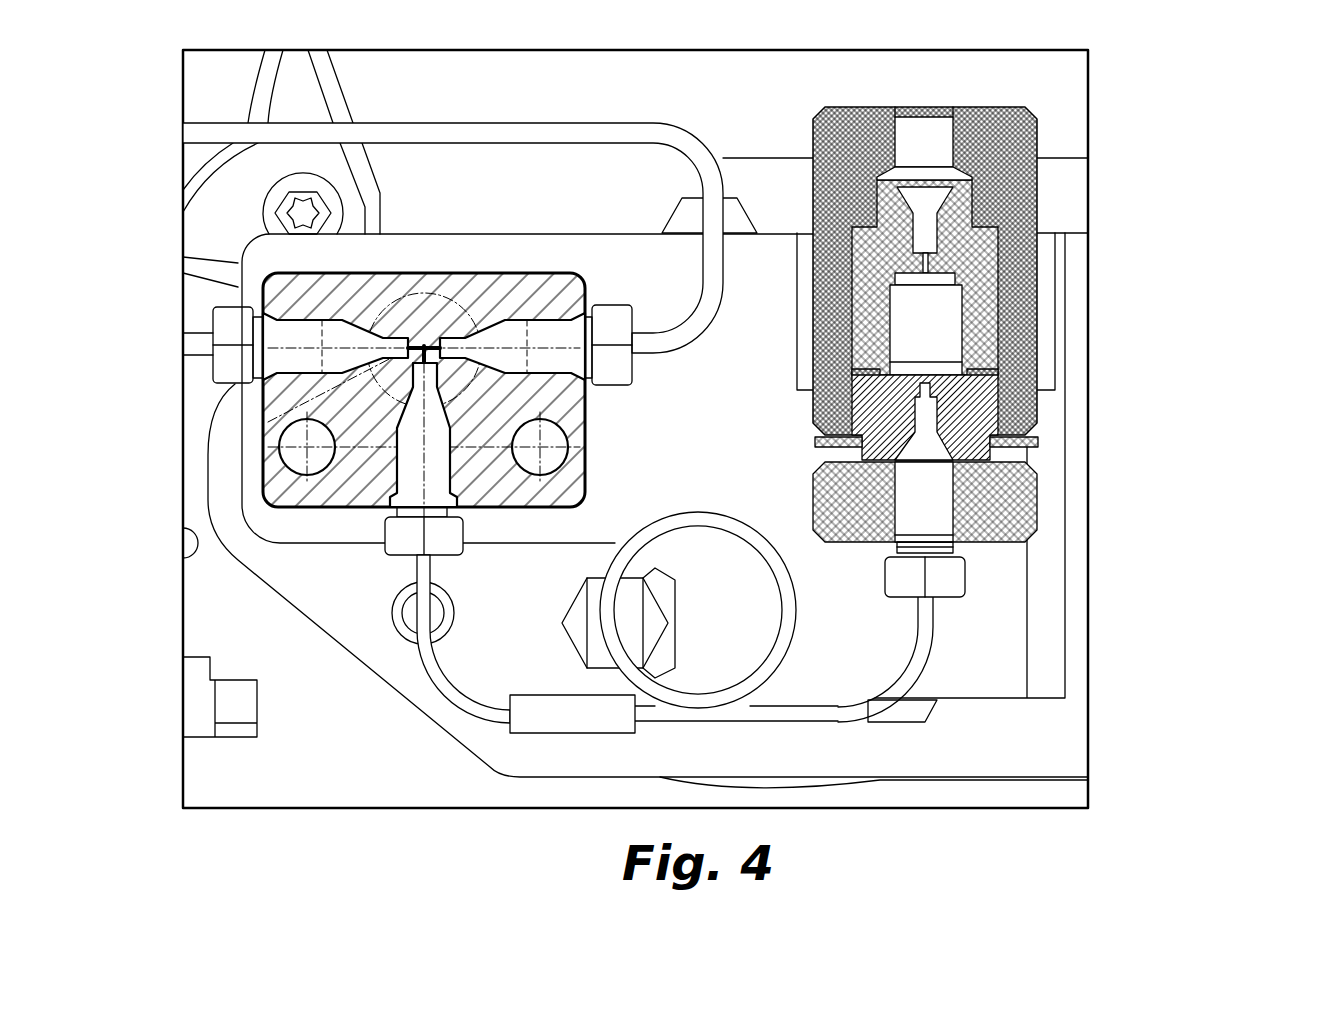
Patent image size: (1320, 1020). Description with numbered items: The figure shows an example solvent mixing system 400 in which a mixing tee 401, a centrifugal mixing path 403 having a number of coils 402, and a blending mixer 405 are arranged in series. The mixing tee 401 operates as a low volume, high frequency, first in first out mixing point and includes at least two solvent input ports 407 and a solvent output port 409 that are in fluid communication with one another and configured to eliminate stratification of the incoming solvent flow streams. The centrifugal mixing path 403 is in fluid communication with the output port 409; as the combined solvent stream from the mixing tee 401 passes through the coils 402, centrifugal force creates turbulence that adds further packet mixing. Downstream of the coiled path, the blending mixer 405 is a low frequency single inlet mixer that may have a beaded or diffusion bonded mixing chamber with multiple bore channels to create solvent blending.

The solvent mixing system 400 is at (1114, 137).
The mixing tee 401 is at (262, 417).
The coils 402 is at (693, 510).
The centrifugal mixing path 403 is at (779, 720).
The blending mixer 405 is at (999, 357).
The solvent input ports 407 is at (523, 313).
The solvent output port 409 is at (452, 477).